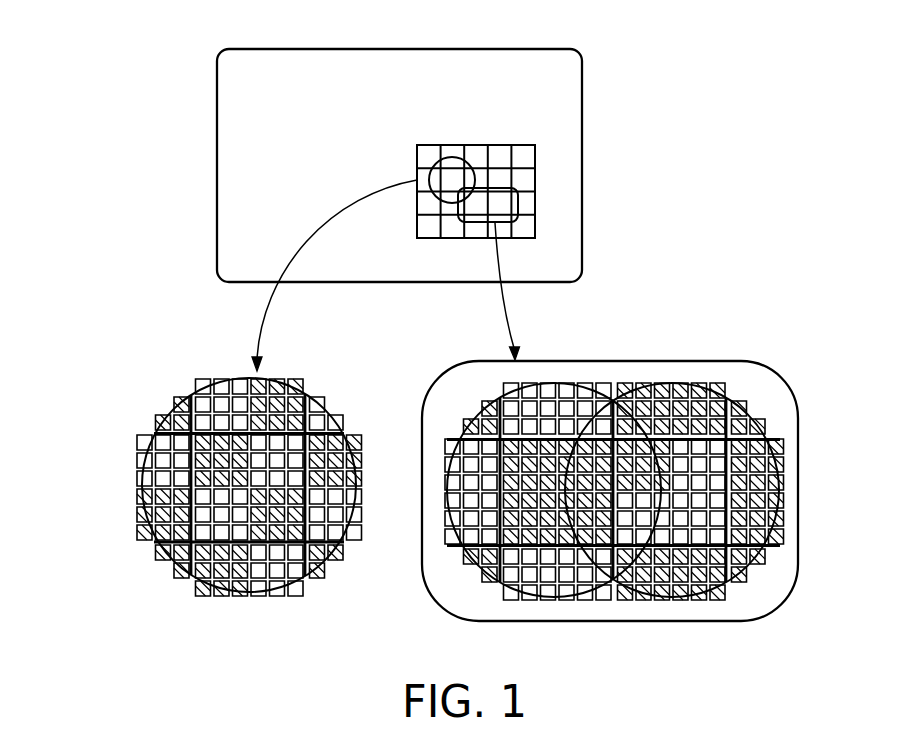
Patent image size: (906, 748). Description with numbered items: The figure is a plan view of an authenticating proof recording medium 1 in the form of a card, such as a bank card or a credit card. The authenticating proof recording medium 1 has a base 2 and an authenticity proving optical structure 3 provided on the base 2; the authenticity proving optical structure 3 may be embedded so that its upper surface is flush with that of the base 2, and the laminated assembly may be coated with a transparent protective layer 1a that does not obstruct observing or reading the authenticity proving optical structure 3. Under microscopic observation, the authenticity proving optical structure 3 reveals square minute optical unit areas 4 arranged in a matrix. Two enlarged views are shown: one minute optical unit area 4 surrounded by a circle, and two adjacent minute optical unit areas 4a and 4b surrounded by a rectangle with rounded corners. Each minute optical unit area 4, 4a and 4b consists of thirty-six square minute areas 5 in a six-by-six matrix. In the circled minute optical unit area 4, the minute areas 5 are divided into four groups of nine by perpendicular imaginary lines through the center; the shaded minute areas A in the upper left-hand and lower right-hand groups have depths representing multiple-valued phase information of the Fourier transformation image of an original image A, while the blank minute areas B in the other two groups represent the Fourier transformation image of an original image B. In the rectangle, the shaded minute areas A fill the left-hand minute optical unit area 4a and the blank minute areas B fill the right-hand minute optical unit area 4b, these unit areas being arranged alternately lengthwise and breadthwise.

The authenticating proof recording medium 1 is at (602, 93).
The transparent protective layer 1a is at (515, 70).
The base 2 is at (582, 157).
The authenticity proving optical structure 3 is at (537, 183).
The minute optical unit area 4 is at (256, 598).
The left-hand minute optical unit area 4a is at (527, 597).
The right-hand minute optical unit area 4b is at (642, 597).
The minute area 5 is at (599, 594).
The shaded minute areas A is at (153, 433).
The blank minute areas B is at (335, 422).